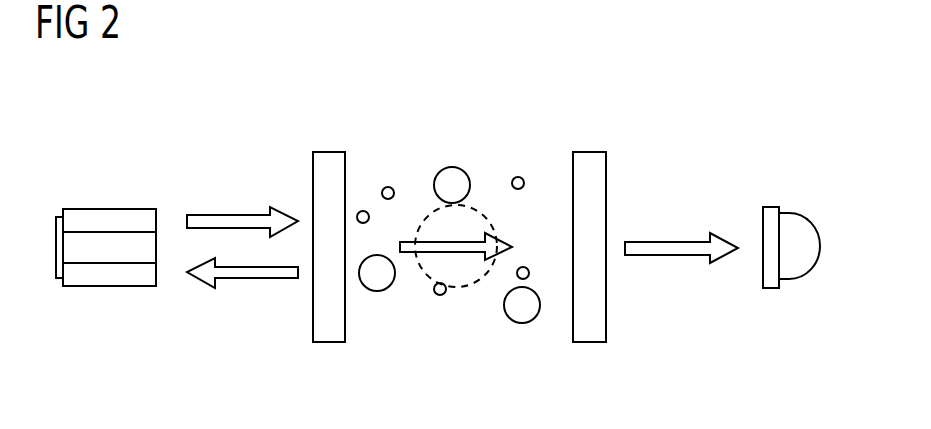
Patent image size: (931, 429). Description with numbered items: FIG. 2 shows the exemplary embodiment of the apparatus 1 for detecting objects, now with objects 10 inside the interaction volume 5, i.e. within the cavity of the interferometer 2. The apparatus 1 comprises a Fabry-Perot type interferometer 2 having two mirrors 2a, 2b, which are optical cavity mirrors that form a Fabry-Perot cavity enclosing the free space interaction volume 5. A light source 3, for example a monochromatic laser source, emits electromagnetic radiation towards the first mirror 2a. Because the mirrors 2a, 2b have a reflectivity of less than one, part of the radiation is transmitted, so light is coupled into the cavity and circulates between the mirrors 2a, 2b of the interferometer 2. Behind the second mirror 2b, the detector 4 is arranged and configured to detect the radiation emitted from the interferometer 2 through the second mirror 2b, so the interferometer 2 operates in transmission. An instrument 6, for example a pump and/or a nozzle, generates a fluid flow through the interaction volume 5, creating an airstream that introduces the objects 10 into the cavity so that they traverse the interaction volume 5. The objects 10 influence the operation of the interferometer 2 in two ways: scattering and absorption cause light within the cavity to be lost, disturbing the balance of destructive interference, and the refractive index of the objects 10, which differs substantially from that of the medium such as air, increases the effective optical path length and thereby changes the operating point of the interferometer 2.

The apparatus for detecting objects 1 is at (77, 128).
The Fabry-Perot type interferometer 2 is at (459, 251).
The first mirror 2a is at (330, 162).
The second mirror 2b is at (589, 162).
The light source 3 is at (114, 219).
The detector 4 is at (796, 225).
The free space interaction volume 5 is at (410, 184).
The instrument for generating a fluid flow 6 is at (427, 276).
The objects 10 is at (466, 170).